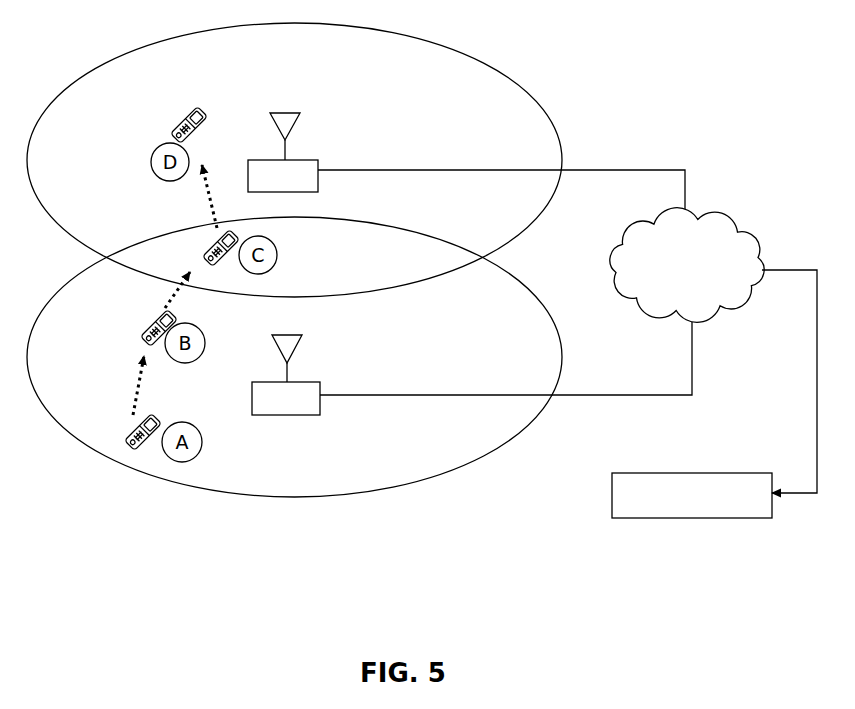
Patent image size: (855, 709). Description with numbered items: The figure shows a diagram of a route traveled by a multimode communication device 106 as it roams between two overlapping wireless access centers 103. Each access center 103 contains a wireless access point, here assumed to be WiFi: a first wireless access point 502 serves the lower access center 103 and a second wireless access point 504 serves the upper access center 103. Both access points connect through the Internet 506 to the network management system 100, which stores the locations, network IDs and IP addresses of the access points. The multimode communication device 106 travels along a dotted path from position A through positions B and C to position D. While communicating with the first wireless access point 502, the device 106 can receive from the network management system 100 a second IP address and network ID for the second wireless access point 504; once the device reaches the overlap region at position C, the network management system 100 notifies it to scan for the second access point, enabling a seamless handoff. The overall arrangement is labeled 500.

The wireless access center 103 is at (307, 56).
The wireless access point 504 is at (303, 188).
The wireless access point 502 is at (305, 411).
The Internet 506 is at (665, 297).
The network management system 100 is at (757, 511).
The multimode communication device 106 is at (122, 441).
The network environment 500 is at (423, 637).